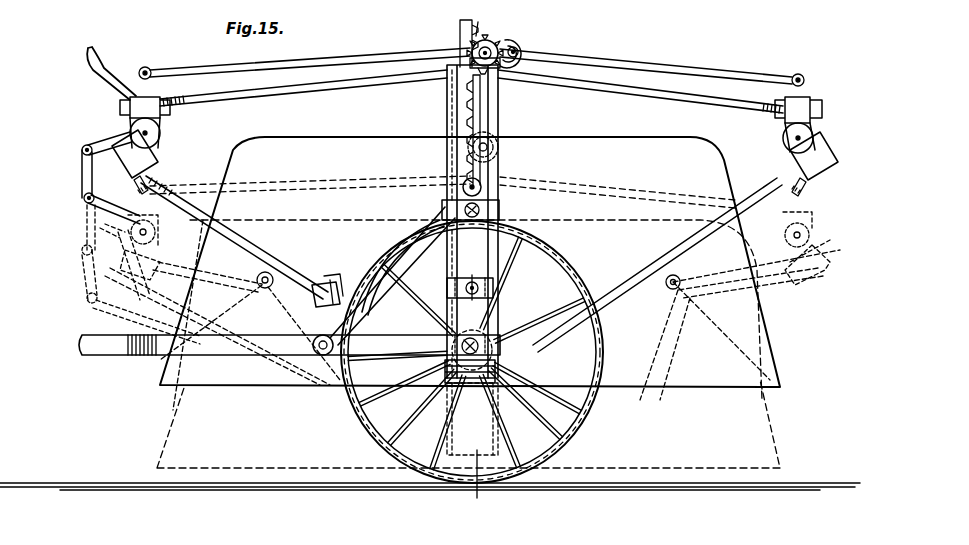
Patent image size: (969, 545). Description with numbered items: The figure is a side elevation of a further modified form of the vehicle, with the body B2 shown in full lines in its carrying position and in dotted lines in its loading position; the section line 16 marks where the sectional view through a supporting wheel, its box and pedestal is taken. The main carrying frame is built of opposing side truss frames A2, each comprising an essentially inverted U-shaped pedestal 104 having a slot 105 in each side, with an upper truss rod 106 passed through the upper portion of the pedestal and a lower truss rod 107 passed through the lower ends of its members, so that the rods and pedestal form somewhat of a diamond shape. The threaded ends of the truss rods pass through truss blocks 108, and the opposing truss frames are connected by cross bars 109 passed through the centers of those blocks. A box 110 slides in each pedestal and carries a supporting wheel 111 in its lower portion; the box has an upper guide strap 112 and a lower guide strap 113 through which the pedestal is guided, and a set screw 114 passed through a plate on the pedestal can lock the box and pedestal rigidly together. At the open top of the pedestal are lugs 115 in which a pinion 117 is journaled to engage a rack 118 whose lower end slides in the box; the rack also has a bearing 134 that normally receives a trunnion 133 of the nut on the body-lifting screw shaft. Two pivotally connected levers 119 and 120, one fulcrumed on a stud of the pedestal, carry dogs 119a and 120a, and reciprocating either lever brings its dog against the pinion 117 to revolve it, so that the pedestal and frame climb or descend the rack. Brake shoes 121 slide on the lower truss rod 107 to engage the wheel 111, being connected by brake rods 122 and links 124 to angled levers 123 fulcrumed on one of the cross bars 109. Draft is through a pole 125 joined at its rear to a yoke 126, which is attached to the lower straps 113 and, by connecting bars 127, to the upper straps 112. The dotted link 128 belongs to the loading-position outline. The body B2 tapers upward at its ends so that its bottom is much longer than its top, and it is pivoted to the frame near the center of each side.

The section line 16— 16 is at (478, 258).
The pedestal 104 is at (500, 128).
The slot 105 is at (455, 126).
The upper truss rod 106 is at (471, 93).
The lower truss rod 107 is at (296, 262).
The truss block 108 is at (148, 154).
The cross bar 109 is at (160, 135).
The box 110 is at (470, 277).
The supporting wheel 111 is at (387, 267).
The upper guide strap 112 is at (500, 210).
The lower guide strap 113 is at (428, 341).
The set screw 114 is at (472, 300).
The lug 115 is at (470, 57).
The pinion 117 is at (486, 38).
The rack 118 is at (468, 147).
The lever 119 is at (304, 56).
The dog 119a is at (516, 44).
The lever 120 is at (652, 67).
The dog 120a is at (520, 67).
The brake shoe 121 is at (340, 282).
The brake rod 122 is at (222, 312).
The angled lever 123 is at (100, 242).
The link 124 is at (98, 180).
The pole 125 is at (199, 336).
The yoke 126 is at (307, 345).
The connecting bar 127 is at (392, 276).
The link 128 is at (740, 306).
The trunnion 133 is at (462, 188).
The bearing 134 is at (481, 186).
The side truss frame A2 is at (751, 140).
The body B2 is at (465, 302).